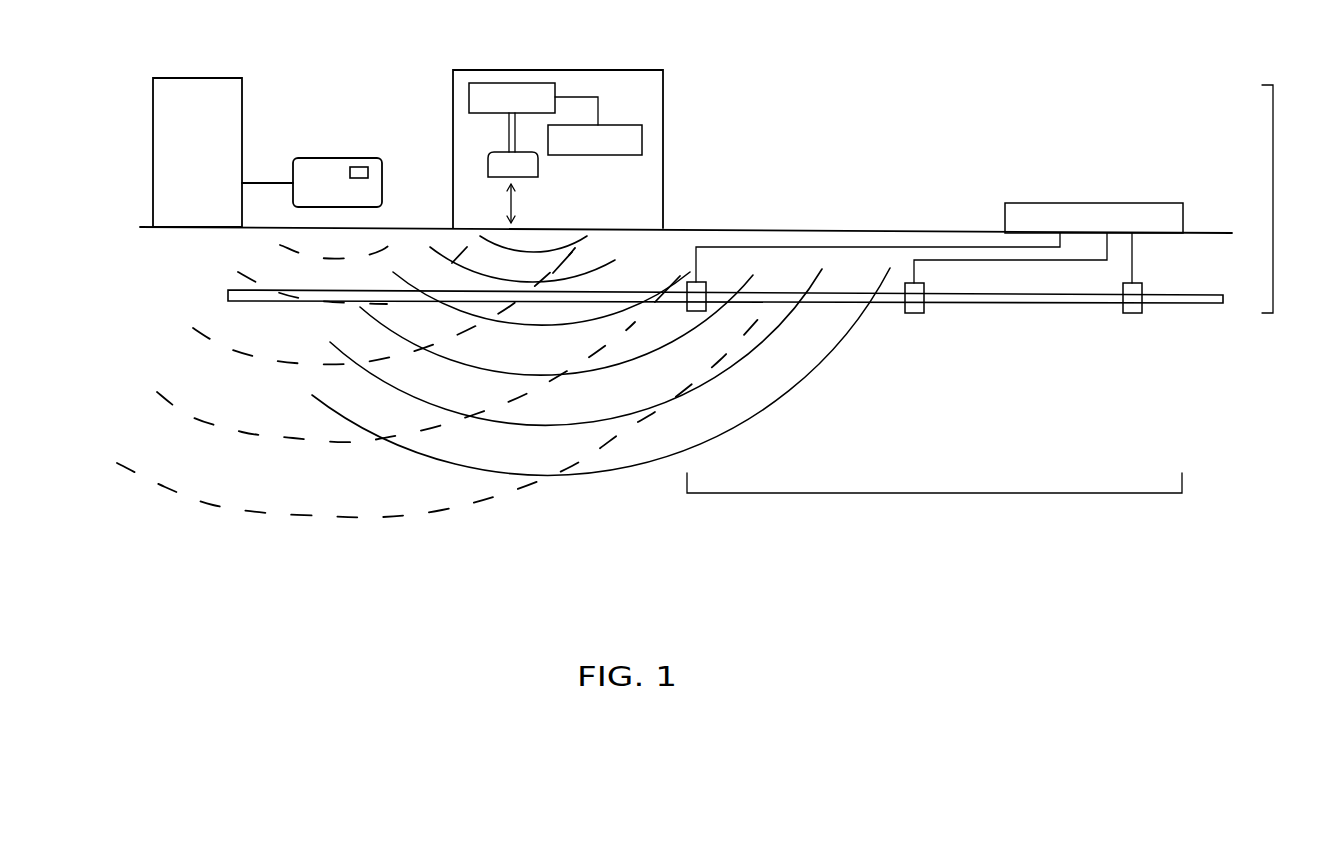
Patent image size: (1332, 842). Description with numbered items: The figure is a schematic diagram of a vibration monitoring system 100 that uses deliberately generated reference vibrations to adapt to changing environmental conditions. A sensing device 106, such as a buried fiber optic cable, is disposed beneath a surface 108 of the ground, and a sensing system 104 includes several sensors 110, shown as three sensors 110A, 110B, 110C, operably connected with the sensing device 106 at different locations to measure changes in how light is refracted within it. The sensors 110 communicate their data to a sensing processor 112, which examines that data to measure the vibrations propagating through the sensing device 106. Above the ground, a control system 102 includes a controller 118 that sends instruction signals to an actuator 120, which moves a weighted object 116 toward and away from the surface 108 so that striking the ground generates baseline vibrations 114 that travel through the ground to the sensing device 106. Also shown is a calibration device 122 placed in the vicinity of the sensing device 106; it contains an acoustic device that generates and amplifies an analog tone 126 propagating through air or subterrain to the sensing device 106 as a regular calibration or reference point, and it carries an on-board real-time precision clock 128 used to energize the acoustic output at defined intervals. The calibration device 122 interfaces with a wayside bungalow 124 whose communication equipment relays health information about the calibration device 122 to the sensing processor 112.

The vibration monitoring system 100 is at (1273, 202).
The control system 102 is at (594, 149).
The sensing system 104 is at (935, 493).
The sensing device 106 is at (656, 289).
The surface 108 is at (823, 229).
The sensors 110 is at (951, 284).
The sensor 110A is at (722, 271).
The sensor 110B is at (925, 310).
The sensor 110C is at (1119, 312).
The sensing processor 112 is at (1098, 203).
The baseline vibrations 114 is at (630, 478).
The weighted object 116 is at (535, 179).
The controller 118 is at (597, 157).
The actuator 120 is at (557, 88).
The calibration device 122 is at (314, 156).
The wayside bungalow 124 is at (215, 76).
The analog tone 126 is at (375, 527).
The precision clock 128 is at (361, 166).